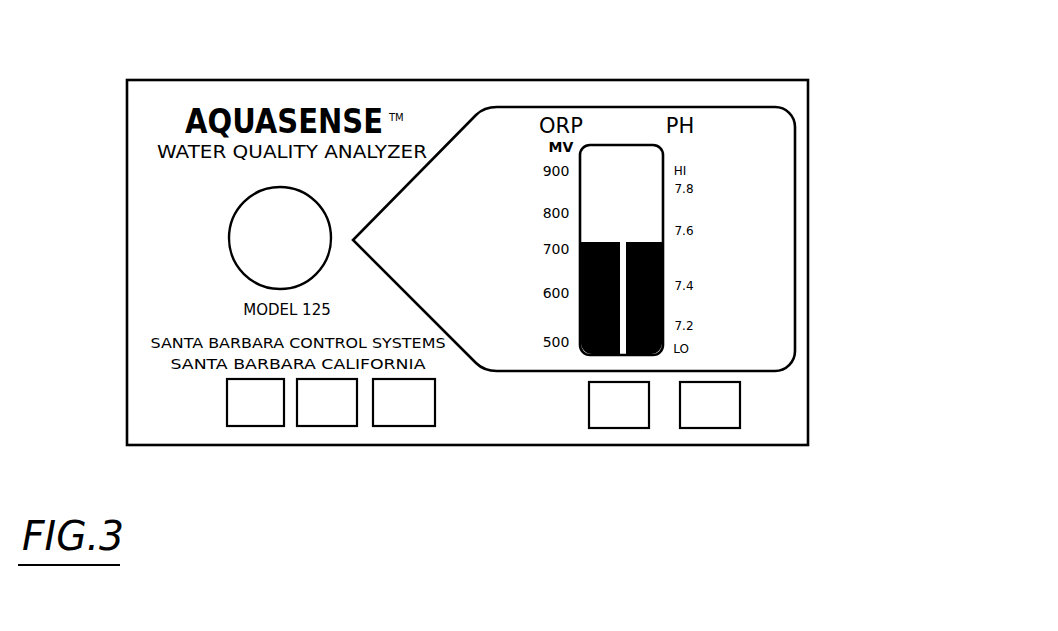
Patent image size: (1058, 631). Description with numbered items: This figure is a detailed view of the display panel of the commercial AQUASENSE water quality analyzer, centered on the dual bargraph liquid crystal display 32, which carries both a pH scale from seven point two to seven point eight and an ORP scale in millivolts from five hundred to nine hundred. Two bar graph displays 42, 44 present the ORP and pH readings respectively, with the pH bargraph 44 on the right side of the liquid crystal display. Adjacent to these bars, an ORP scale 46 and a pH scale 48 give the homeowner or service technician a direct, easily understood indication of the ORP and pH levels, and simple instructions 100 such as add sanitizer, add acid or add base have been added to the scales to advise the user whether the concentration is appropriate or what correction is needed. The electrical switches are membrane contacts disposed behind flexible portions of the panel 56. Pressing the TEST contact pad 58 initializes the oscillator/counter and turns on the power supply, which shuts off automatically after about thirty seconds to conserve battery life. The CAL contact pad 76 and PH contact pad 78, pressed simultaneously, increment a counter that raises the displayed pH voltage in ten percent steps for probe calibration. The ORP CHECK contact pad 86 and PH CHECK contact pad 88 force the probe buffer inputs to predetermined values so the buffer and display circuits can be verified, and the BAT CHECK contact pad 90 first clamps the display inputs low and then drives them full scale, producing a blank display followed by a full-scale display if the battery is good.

The dual bargraph liquid crystal display 32 is at (650, 54).
The ORP bar graph display 42 is at (604, 240).
The pH bar graph display 44 is at (641, 240).
The ORP scale 46 is at (496, 229).
The pH scale 48 is at (744, 238).
The panel 56 is at (772, 131).
The TEST contact pad 58 is at (230, 240).
The CAL contact pad 76 is at (626, 428).
The PH contact pad 78 is at (727, 428).
The ORP CHECK contact pad 86 is at (328, 427).
The PH CHECK contact pad 88 is at (413, 427).
The BAT CHECK contact pad 90 is at (262, 427).
The simple instructions 100 is at (761, 165).